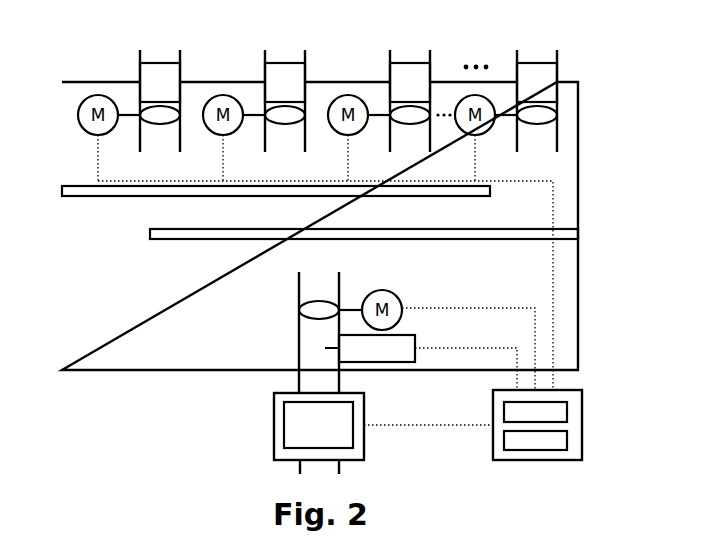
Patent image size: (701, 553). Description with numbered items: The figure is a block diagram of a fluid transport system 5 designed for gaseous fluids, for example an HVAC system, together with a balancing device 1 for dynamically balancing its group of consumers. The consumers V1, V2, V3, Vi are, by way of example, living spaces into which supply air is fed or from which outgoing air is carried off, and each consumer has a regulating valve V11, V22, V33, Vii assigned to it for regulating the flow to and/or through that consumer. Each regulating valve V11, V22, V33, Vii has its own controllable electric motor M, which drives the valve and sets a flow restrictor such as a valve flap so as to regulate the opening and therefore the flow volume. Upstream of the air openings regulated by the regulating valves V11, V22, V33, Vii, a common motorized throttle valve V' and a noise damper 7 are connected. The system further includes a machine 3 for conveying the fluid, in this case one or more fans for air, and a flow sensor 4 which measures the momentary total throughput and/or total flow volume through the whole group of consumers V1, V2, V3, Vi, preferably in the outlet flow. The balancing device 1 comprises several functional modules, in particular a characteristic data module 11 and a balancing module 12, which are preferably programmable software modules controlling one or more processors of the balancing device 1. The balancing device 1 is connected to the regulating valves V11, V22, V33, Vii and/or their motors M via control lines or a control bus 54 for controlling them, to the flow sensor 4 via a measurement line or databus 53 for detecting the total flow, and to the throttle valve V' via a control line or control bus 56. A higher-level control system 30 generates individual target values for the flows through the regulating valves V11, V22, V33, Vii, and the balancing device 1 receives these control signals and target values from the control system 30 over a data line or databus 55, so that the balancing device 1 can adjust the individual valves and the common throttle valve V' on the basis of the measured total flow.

The balancing device 1 is at (580, 394).
The characteristic data module 11 is at (562, 412).
The balancing module 12 is at (562, 442).
The machine 3 is at (287, 420).
The higher-level control system 30 is at (276, 442).
The flow sensor 4 is at (404, 355).
The fluid transport system 5 is at (82, 383).
The noise damper 7 is at (90, 219).
The measurement line or databus 53 is at (457, 348).
The control lines or control bus 54 is at (553, 251).
The data line or databus 55 is at (429, 429).
The control line or control bus 56 is at (457, 308).
The consumer V1 is at (157, 53).
The consumer V2 is at (282, 53).
The consumer V3 is at (407, 53).
The consumer Vi is at (534, 53).
The regulating valve V11 is at (160, 134).
The regulating valve V22 is at (285, 134).
The regulating valve V33 is at (410, 134).
The regulating valve Vii is at (537, 134).
The common motorized throttle valve V' is at (319, 361).